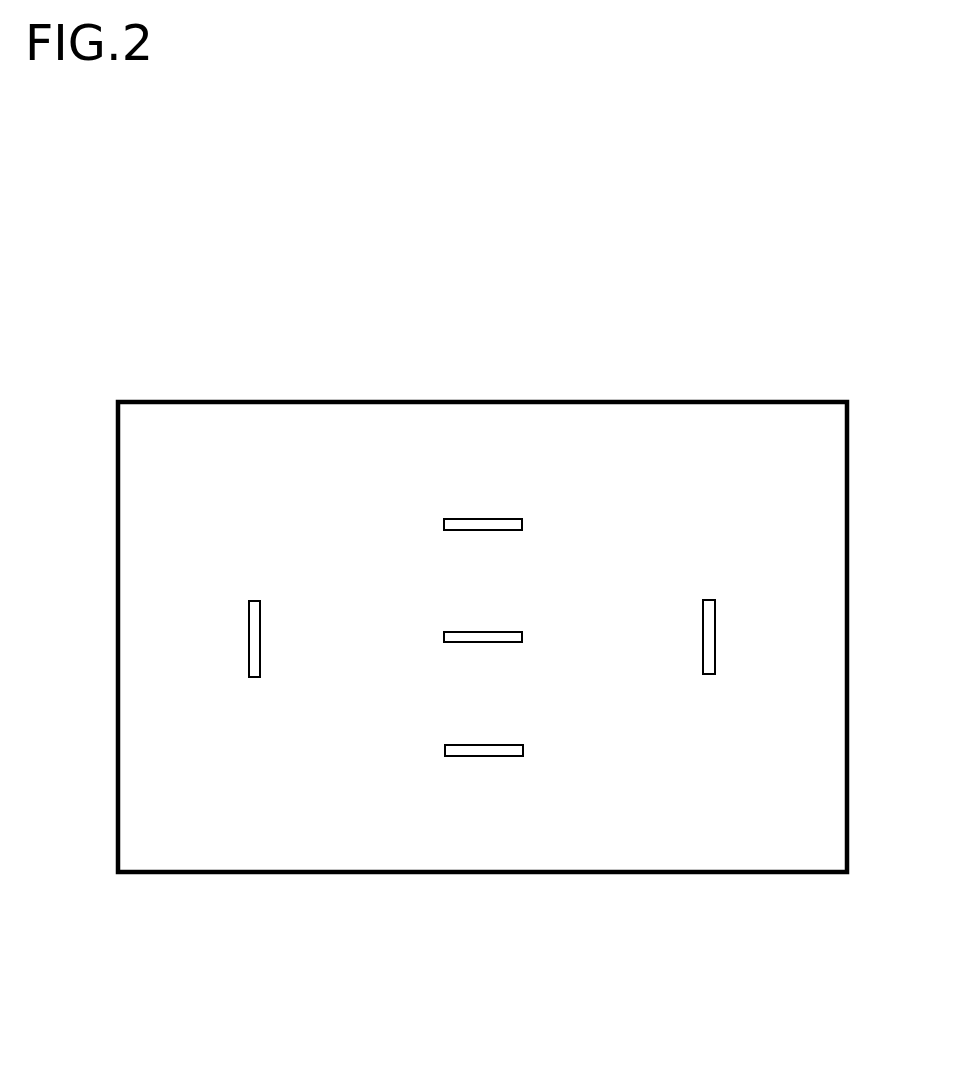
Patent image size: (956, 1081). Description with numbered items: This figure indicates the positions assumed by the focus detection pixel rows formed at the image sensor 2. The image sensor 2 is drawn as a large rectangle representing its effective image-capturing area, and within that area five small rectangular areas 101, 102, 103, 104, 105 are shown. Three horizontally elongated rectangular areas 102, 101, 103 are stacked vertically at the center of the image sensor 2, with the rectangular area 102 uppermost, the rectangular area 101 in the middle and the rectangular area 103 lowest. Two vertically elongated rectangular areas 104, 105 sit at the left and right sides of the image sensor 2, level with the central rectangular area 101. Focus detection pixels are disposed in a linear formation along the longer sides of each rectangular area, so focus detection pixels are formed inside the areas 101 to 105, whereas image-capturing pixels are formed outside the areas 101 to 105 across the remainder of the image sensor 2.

The image sensor 2 is at (393, 402).
The rectangular area 101 is at (525, 600).
The rectangular area 102 is at (482, 495).
The rectangular area 103 is at (483, 785).
The rectangular area 104 is at (254, 560).
The rectangular area 105 is at (712, 570).